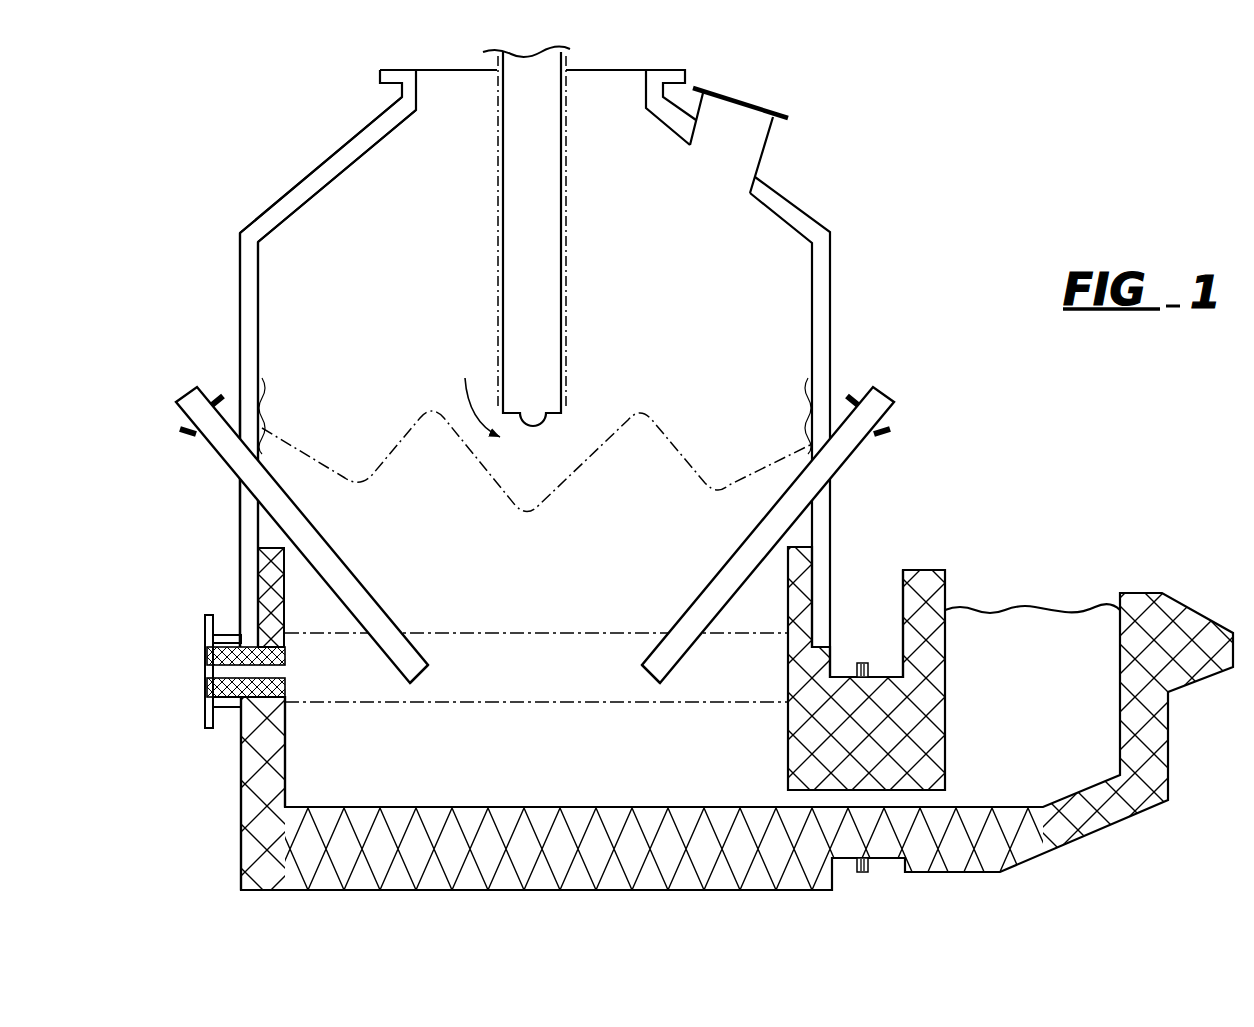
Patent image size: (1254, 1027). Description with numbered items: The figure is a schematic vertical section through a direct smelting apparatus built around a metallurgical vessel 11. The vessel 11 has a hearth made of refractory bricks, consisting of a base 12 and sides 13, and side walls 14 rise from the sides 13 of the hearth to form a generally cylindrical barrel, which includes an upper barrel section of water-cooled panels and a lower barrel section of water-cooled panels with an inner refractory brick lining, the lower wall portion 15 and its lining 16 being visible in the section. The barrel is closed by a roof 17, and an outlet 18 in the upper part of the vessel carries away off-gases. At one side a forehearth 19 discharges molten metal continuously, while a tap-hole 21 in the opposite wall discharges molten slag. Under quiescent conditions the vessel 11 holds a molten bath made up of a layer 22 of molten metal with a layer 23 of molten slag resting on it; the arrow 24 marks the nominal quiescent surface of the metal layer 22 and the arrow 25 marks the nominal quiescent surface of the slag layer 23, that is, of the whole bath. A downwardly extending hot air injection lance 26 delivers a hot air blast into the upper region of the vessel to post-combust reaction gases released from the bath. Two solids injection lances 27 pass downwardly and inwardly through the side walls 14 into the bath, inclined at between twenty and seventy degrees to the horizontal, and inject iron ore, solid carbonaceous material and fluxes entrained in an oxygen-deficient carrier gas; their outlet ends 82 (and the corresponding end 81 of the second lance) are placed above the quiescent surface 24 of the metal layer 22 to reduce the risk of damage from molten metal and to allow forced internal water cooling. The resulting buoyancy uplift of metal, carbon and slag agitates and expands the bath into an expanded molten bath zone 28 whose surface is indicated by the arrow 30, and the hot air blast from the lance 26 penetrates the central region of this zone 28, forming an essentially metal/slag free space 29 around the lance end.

The metallurgical vessel 11 is at (262, 207).
The base 12 is at (348, 845).
The sides 13 is at (268, 760).
The side walls 14 is at (236, 523).
The vertical wall portion 15 is at (252, 298).
The upper refractory lining 16 is at (253, 571).
The roof 17 is at (338, 162).
The outlet 18 is at (773, 128).
The forehearth 19 is at (1043, 716).
The tap-hole 21 is at (207, 682).
The layer of molten metal 22 is at (598, 769).
The layer of molten slag 23 is at (483, 683).
The nominal quiescent surface of the metal layer 24 is at (568, 698).
The nominal quiescent surface of the slag layer 25 is at (568, 630).
The hot air injection lance 26 is at (563, 225).
The solids injection lances 27 is at (178, 400).
The expanded molten bath zone 28 is at (540, 493).
The metal/slag free space 29 is at (470, 381).
The surface of the expanded molten bath zone 30 is at (398, 436).
The right baffle lower end 81 is at (652, 674).
The outlet ends 82 is at (411, 684).